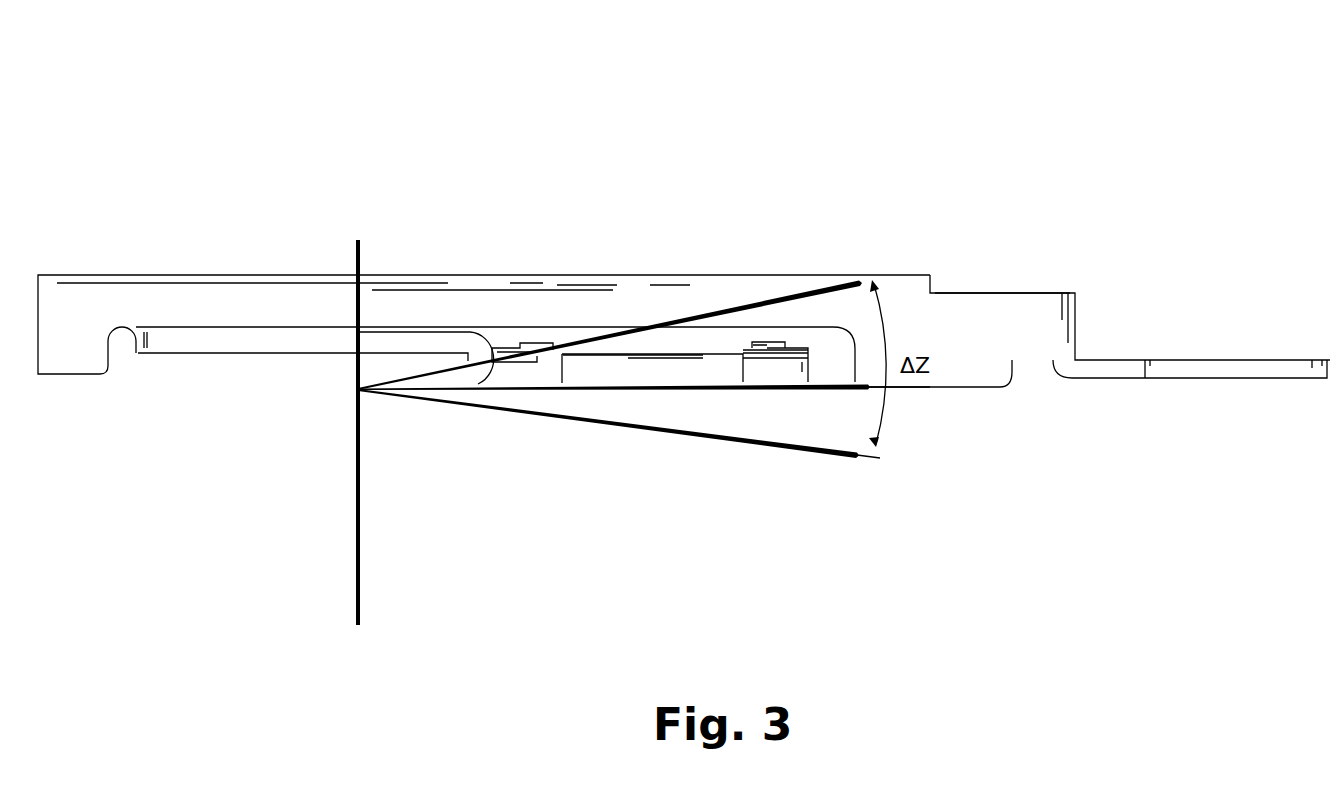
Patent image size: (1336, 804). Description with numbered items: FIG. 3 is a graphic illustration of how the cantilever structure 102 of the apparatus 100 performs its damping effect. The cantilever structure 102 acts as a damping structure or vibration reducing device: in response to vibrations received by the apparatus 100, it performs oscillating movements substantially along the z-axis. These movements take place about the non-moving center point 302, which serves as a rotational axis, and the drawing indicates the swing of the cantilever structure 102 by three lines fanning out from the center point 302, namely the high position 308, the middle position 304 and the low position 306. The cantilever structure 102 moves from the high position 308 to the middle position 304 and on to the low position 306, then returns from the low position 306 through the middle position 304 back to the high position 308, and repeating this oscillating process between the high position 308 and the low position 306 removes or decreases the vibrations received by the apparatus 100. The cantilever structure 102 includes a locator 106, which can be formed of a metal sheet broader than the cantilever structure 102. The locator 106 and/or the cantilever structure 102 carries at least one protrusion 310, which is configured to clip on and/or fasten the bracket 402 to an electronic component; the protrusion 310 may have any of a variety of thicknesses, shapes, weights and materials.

The apparatus 100 is at (280, 78).
The cantilever structure 102 is at (808, 368).
The locator 106 is at (614, 370).
The center point 302 is at (367, 406).
The middle position 304 is at (678, 392).
The low position 306 is at (760, 440).
The high position 308 is at (783, 292).
The protrusion 310 is at (522, 336).
The bracket 402 is at (1030, 300).